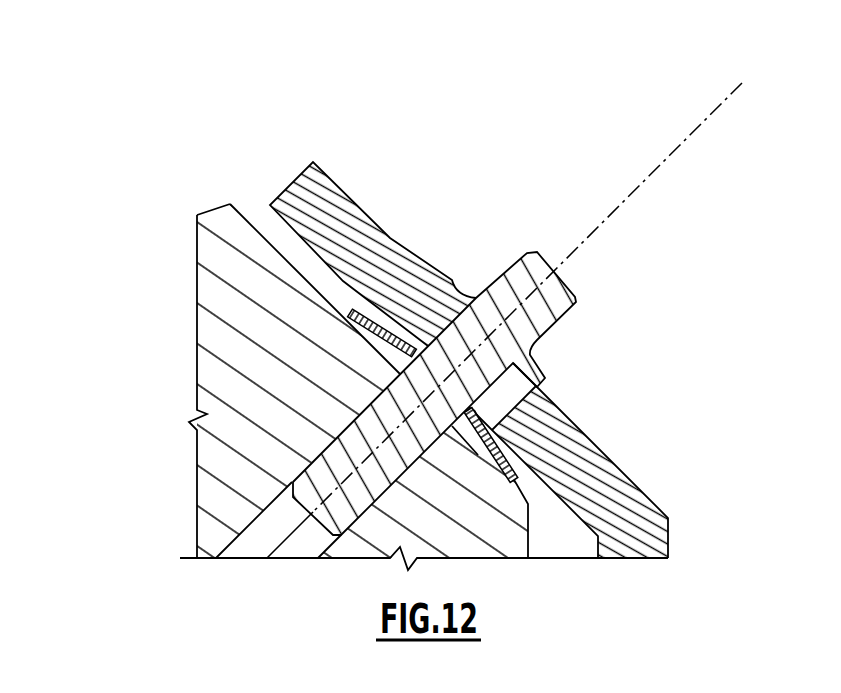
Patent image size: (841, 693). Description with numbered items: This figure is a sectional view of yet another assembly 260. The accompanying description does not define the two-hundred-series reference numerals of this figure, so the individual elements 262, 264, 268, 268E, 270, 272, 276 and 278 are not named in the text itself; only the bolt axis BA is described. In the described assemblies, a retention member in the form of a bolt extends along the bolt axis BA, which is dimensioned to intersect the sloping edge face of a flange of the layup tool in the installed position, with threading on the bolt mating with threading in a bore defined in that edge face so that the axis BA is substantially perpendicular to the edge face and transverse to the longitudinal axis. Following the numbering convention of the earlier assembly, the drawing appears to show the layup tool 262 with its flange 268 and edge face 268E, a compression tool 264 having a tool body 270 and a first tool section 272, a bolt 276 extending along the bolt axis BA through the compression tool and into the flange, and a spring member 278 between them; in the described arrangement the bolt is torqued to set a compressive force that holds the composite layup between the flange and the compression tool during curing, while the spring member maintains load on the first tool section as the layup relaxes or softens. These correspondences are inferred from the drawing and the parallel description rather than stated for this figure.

The fastened joint assembly 260 is at (130, 90).
The first component / base plate 262 is at (199, 213).
The second component / bent plate 264 is at (356, 213).
The wall of first component 268 is at (197, 387).
The edge of wall 268E is at (243, 211).
The third component / plate 270 is at (622, 498).
The composite layer of second component 272 is at (328, 200).
The fastener / bolt 276 is at (588, 294).
The sealant / shim strips 278 is at (352, 324).
The bolt axis BA is at (716, 110).